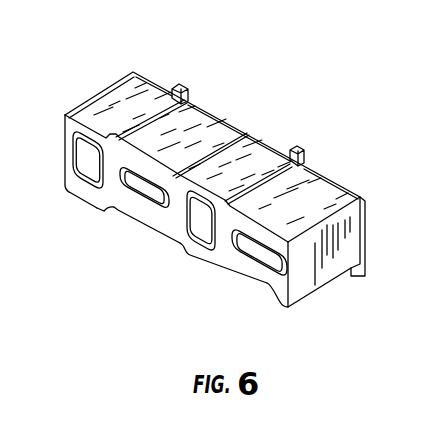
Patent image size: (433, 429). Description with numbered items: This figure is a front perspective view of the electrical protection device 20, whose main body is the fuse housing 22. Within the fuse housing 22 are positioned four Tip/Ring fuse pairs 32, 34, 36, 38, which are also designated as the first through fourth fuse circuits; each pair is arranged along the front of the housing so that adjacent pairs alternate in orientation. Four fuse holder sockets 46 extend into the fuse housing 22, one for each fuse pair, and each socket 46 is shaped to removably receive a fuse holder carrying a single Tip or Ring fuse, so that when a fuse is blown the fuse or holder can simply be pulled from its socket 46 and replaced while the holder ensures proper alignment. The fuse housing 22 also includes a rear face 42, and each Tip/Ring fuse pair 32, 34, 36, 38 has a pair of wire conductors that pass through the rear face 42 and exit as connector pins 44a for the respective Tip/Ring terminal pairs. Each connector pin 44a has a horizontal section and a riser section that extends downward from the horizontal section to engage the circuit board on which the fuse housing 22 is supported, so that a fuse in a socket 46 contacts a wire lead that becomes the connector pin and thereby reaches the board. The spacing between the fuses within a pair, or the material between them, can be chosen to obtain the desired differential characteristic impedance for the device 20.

The electrical protection device 20 is at (237, 86).
The fuse housing 22 is at (110, 93).
The Tip/Ring fuse pair 32 is at (73, 193).
The Tip/Ring fuse pair 34 is at (132, 218).
The Tip/Ring fuse pair 36 is at (198, 267).
The Tip/Ring fuse pair 38 is at (273, 285).
The rear face 42 is at (323, 177).
The connector pin 44a is at (177, 82).
The fuse holder socket 46 is at (68, 152).